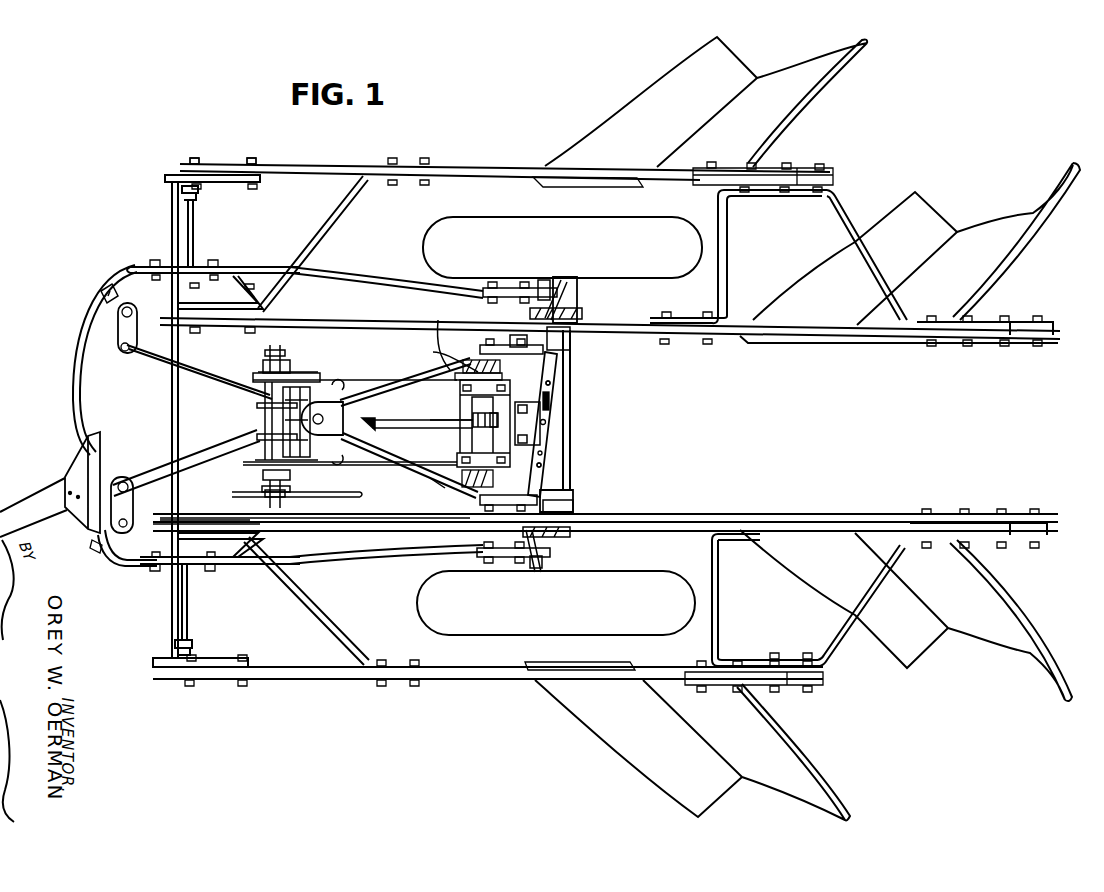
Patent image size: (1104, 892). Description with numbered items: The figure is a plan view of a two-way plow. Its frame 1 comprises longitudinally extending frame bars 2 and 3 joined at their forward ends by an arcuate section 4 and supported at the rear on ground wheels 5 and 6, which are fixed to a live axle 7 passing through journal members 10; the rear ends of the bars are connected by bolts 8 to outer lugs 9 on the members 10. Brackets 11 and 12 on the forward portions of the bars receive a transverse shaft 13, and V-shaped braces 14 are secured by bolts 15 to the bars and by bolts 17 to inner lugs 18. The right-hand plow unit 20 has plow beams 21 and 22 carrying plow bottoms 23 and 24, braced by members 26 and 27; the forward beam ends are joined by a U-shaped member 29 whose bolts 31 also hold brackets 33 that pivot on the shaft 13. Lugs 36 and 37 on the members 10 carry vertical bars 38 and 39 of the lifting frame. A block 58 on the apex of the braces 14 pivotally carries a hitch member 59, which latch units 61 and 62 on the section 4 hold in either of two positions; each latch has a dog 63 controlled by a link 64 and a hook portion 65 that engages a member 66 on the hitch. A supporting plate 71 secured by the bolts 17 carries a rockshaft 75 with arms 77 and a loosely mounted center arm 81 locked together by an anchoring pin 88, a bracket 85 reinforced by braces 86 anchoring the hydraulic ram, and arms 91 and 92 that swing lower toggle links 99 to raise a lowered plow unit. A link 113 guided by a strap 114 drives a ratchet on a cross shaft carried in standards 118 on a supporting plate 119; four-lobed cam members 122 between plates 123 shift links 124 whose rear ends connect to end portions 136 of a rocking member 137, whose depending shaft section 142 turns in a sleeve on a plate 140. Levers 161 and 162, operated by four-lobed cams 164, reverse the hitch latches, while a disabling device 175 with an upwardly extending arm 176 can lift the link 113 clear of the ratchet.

The frame 1 is at (125, 266).
The frame bar 2 is at (372, 280).
The frame bar 3 is at (361, 558).
The arcuate section 4 is at (87, 350).
The ground wheel 5 is at (502, 222).
The ground wheel 6 is at (609, 626).
The live axle 7 is at (562, 406).
The bolts 8 is at (522, 282).
The outer lugs 9 is at (490, 282).
The journal members 10 is at (578, 294).
The bracket 11 is at (233, 266).
The bracket 12 is at (215, 566).
The transverse shaft 13 is at (184, 608).
The V-shaped braces 14 is at (423, 375).
The bolts 15 is at (158, 260).
The bolts 17 is at (480, 347).
The inner lugs 18 is at (512, 335).
The right-hand plow unit 20 is at (477, 164).
The plow beam 21 is at (334, 165).
The plow beam 22 is at (320, 319).
The plow bottom 23 is at (645, 110).
The plow bottom 24 is at (886, 216).
The bracing member 26 is at (327, 223).
The bracing member 27 is at (728, 243).
The U-shaped member 29 is at (172, 210).
The bolts 31 is at (250, 158).
The brackets 33 is at (168, 175).
The lug 36 is at (584, 313).
The lug 37 is at (571, 334).
The vertical bar 38 is at (538, 297).
The vertical bar 39 is at (565, 280).
The block 58 is at (348, 413).
The hitch member 59 is at (40, 500).
The latch unit 61 is at (101, 293).
The latch unit 62 is at (97, 552).
The dog 63 is at (137, 336).
The link 64 is at (218, 377).
The hook portion 65 is at (121, 351).
The member 66 is at (97, 436).
The supporting plate 71 is at (436, 487).
The rockshaft 75 is at (460, 400).
The arms 77 is at (473, 420).
The center arm 81 is at (498, 422).
The bracket 85 is at (397, 420).
The braces 86 is at (346, 422).
The anchoring pin 88 is at (458, 442).
The arm 91 is at (445, 349).
The arm 92 is at (437, 332).
The lower toggle link 99 is at (555, 386).
The link 113 is at (353, 514).
The guide strap 114 is at (273, 509).
The standards 118 is at (282, 358).
The supporting plate 119 is at (290, 368).
The four-lobed cam members 122 is at (291, 474).
The plates 123 is at (257, 372).
The link 124 is at (385, 378).
The end portions 136 is at (571, 363).
The rocking member 137 is at (553, 448).
The plate 140 is at (532, 430).
The depending shaft section 142 is at (548, 422).
The lever 161 is at (320, 378).
The lever 162 is at (348, 465).
The four-lobed cams 164 is at (256, 407).
The disabling device 175 is at (178, 512).
The arm 176 is at (288, 496).